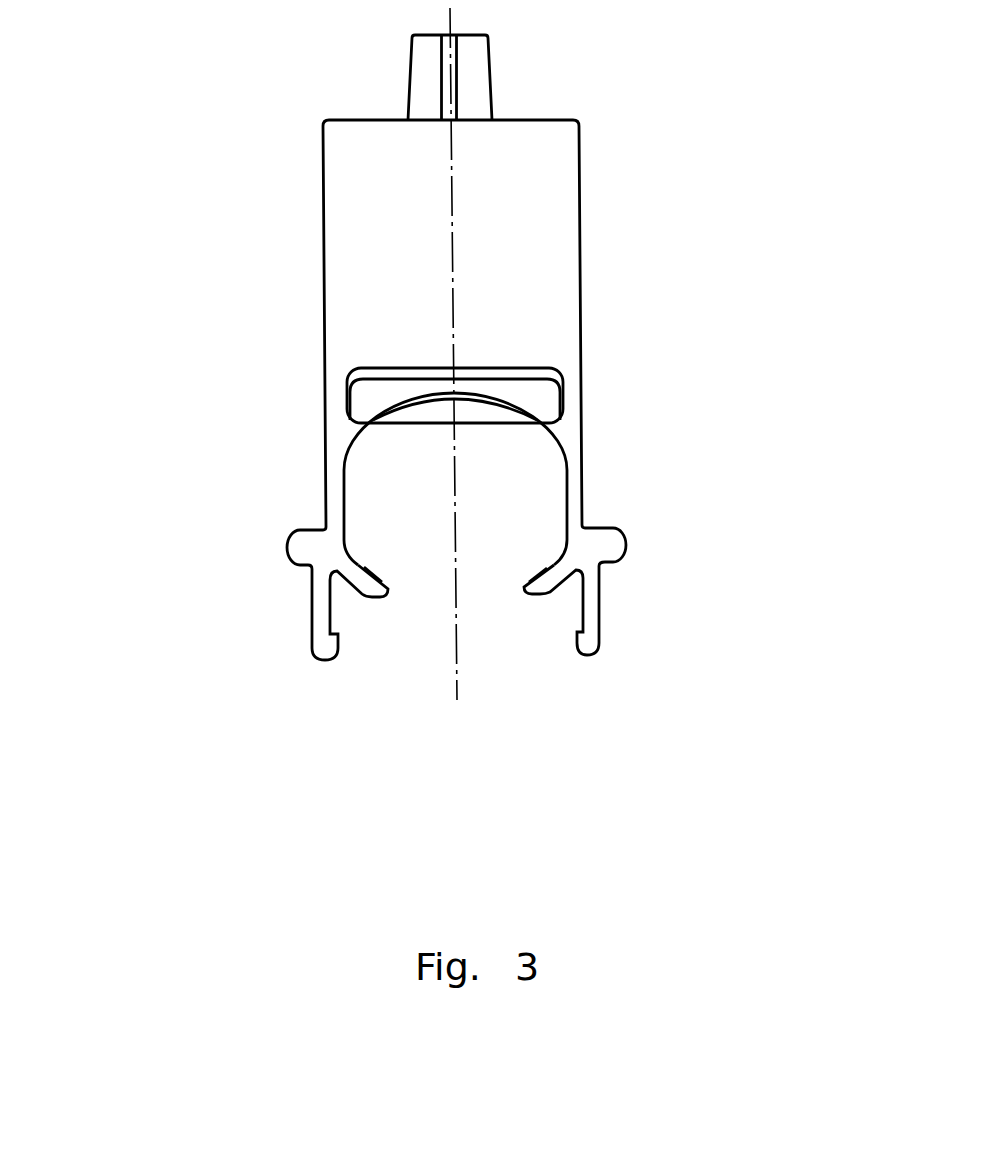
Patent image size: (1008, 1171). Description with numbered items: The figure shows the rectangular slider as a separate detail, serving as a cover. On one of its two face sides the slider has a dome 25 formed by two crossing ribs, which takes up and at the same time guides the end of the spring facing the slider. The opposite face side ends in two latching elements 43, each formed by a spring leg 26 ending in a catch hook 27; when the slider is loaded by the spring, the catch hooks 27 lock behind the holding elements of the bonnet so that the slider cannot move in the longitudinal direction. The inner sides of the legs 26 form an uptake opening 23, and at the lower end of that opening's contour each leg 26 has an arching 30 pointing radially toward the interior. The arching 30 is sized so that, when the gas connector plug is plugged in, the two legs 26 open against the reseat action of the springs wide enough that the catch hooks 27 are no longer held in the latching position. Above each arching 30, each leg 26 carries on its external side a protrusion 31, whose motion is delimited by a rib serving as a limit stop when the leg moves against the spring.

The dome 25 is at (471, 83).
The uptake opening 23 is at (418, 468).
The spring leg 26 is at (337, 477).
The latching element 43 is at (337, 517).
The protrusion 31 is at (298, 547).
The catch hook 27 is at (333, 641).
The arching 30 is at (375, 578).